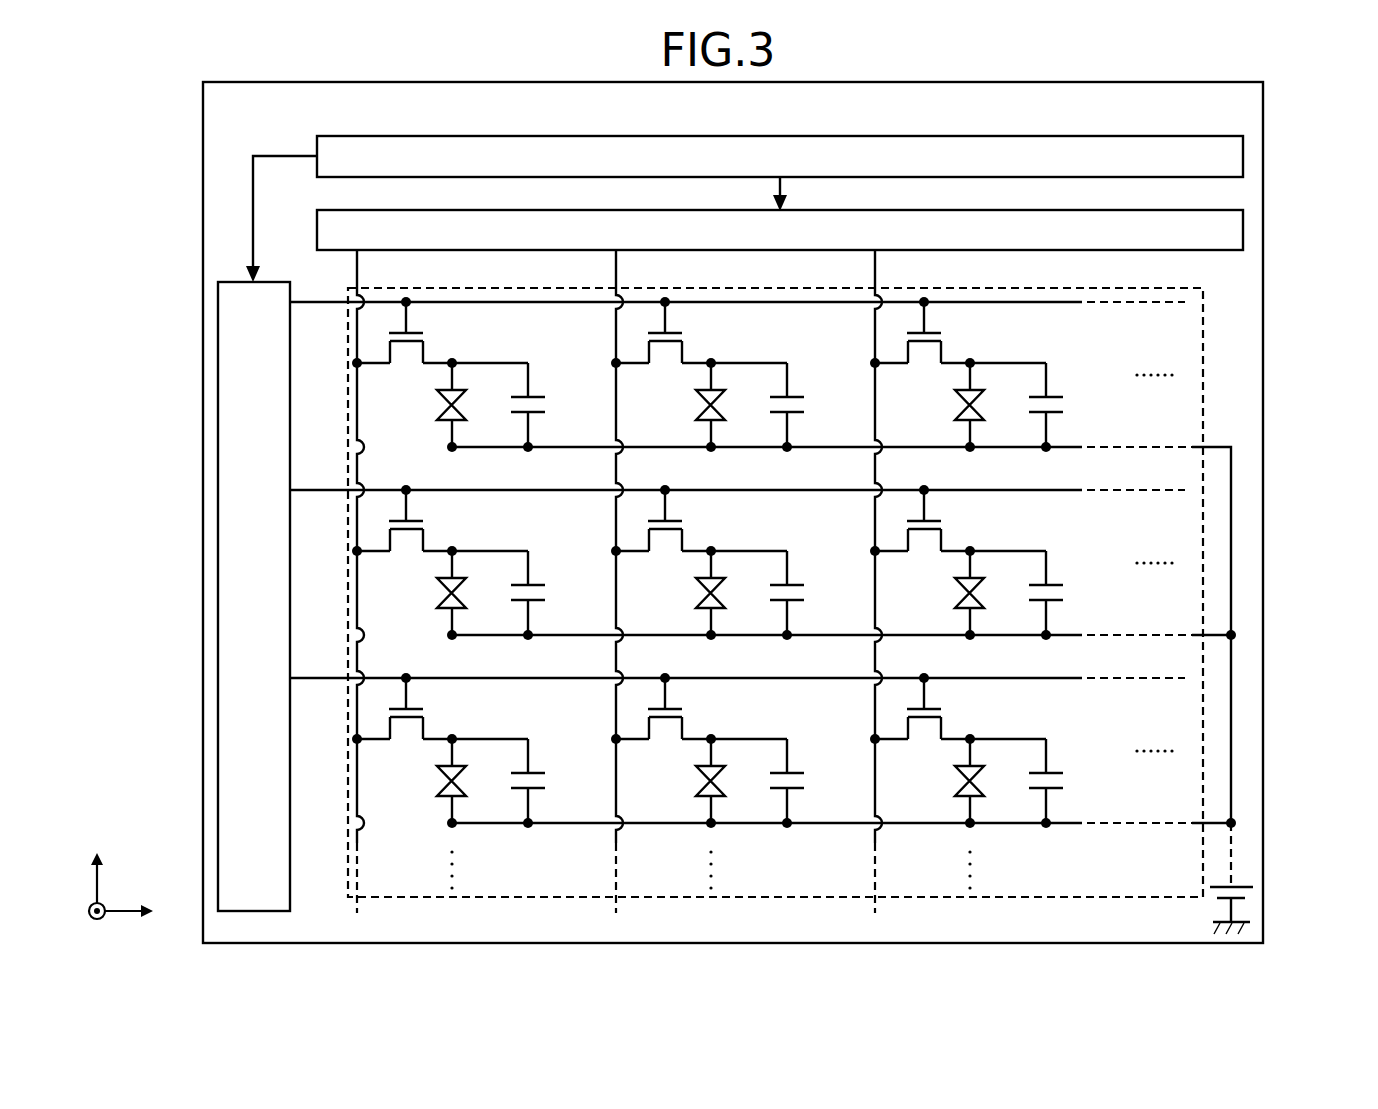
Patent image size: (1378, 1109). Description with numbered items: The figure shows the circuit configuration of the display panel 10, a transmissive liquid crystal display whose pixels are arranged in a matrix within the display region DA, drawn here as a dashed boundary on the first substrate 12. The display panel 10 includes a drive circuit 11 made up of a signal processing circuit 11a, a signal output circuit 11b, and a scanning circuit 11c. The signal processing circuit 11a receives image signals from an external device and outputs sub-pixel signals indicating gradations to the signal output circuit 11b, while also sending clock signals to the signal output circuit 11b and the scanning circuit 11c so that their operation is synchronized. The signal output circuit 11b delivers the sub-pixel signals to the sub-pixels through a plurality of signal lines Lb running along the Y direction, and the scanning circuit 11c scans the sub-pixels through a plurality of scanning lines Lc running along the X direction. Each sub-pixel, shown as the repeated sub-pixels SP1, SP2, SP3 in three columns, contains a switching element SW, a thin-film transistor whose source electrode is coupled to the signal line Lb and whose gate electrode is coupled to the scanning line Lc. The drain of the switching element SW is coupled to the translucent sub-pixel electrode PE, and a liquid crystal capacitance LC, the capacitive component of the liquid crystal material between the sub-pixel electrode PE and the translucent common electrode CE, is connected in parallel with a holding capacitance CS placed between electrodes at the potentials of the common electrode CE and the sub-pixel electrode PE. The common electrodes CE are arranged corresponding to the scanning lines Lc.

The display panel 10 is at (128, 90).
The drive circuit 11 is at (756, 523).
The signal processing circuit 11a is at (1243, 155).
The signal output circuit 11b is at (1243, 229).
The scanning circuit 11c is at (218, 312).
The first substrate 12 is at (203, 110).
The display region DA is at (1203, 340).
The signal line Lb is at (359, 263).
The scanning line Lc is at (317, 300).
The common electrode CE is at (1077, 450).
The switching element SW is at (647, 542).
The sub-pixel electrode PE is at (734, 531).
The liquid crystal capacitance LC is at (730, 595).
The holding capacitance CS is at (814, 595).
The sub-pixel SP1 is at (519, 520).
The sub-pixel SP2 is at (778, 520).
The sub-pixel SP3 is at (1037, 520).